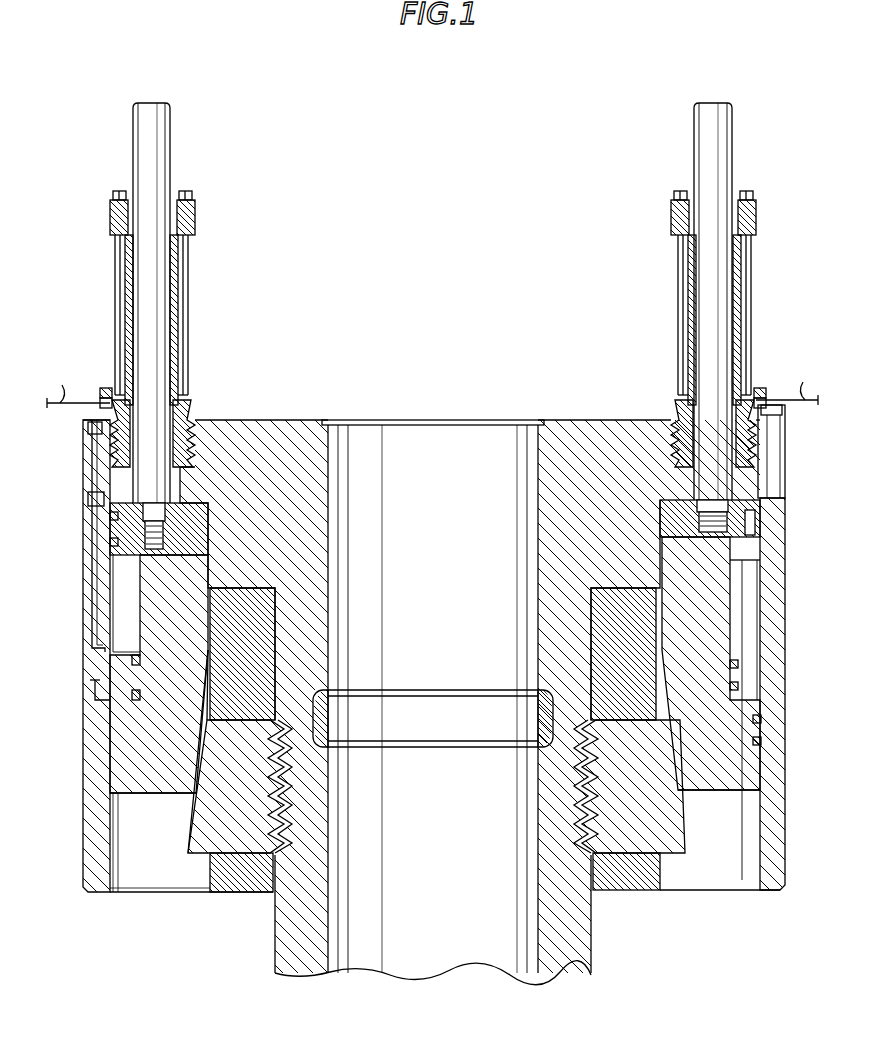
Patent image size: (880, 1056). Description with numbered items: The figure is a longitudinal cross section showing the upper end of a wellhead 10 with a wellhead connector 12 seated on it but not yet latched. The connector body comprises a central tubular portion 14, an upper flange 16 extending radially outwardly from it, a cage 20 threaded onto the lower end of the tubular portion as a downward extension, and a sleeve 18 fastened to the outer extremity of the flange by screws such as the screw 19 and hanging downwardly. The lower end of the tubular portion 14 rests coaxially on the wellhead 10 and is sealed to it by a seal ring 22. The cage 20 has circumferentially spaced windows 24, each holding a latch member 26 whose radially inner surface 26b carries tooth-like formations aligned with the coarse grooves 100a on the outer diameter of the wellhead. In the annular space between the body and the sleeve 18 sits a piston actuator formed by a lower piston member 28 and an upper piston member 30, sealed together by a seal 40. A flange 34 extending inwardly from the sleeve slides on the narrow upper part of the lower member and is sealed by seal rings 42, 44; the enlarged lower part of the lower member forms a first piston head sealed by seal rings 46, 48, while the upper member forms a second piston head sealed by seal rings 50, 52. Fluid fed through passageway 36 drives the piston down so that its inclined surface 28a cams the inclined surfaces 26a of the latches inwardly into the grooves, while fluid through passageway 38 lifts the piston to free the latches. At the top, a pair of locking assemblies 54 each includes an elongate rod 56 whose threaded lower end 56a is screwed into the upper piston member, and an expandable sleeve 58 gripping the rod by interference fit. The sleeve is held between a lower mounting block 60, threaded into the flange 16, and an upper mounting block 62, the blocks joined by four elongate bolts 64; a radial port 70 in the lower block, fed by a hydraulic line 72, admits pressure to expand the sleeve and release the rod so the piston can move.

The wellhead 10 is at (582, 958).
The wellhead connector 12 is at (786, 658).
The central tubular portion 14 is at (330, 612).
The upper flange 16 is at (215, 420).
The sleeve 18 is at (96, 850).
The screw 19 is at (770, 445).
The cage 20 is at (588, 620).
The seal ring 22 is at (545, 700).
The window 24 is at (215, 855).
The latch member 26 is at (192, 835).
The inclined surface 26a is at (200, 762).
The radially inner surface 26b is at (590, 832).
The lower piston member 28 is at (712, 596).
The inclined surface 28a is at (272, 678).
The upper piston member 30 is at (750, 530).
The flange 34 is at (118, 660).
The passageway 36 is at (113, 708).
The passageway 38 is at (96, 612).
The seal 40 is at (742, 580).
The seal ring 42 is at (740, 688).
The seal ring 44 is at (740, 665).
The seal ring 46 is at (762, 722).
The seal ring 48 is at (762, 745).
The seal ring 50 is at (110, 530).
The seal ring 52 is at (110, 543).
The locking assembly 54 is at (437, 314).
The elongate rod 56 is at (160, 137).
The lower end of rod 56a is at (700, 506).
The sleeve 58 is at (172, 270).
The lower mounting block 60 is at (112, 408).
The upper mounting block 62 is at (192, 213).
The elongate bolt 64 is at (124, 268).
The radial port 70 is at (110, 395).
The hydraulic line 72 is at (436, 384).
The coarse grooves 100a is at (290, 800).